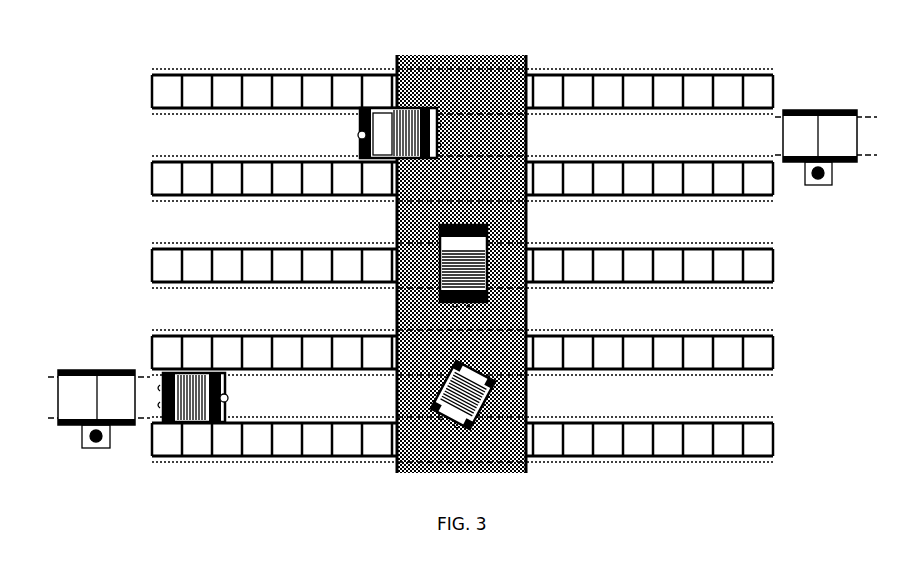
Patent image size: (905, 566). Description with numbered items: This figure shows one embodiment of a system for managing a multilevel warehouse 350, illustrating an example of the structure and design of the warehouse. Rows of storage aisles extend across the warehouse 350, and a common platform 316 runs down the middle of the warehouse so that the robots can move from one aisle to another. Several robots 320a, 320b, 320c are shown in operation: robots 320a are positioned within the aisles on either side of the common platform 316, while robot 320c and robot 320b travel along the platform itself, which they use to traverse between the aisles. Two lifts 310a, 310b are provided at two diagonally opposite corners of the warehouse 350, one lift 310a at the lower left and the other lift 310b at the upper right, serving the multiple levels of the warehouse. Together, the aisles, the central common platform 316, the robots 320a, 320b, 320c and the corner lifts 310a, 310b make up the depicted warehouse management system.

The warehouse 350 is at (77, 140).
The common platform 316 is at (455, 62).
The lift 310a is at (60, 370).
The lift 310b is at (830, 110).
The robot 320a is at (420, 106).
The robot 320b is at (475, 368).
The robot 320c is at (500, 243).